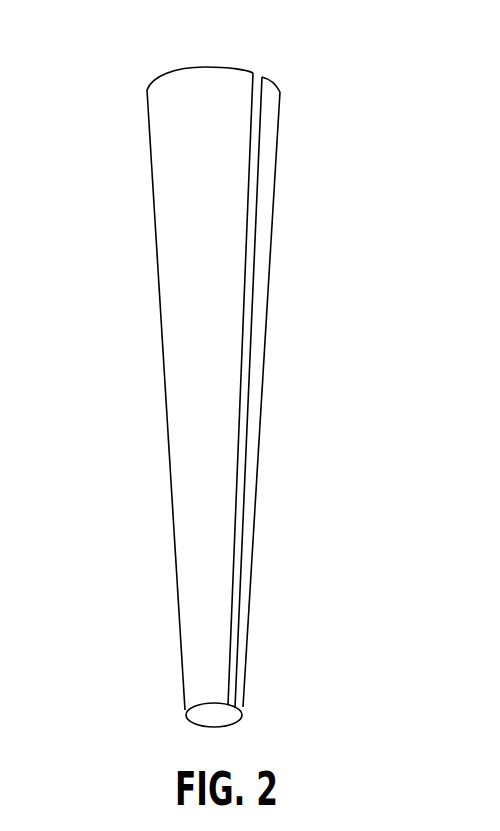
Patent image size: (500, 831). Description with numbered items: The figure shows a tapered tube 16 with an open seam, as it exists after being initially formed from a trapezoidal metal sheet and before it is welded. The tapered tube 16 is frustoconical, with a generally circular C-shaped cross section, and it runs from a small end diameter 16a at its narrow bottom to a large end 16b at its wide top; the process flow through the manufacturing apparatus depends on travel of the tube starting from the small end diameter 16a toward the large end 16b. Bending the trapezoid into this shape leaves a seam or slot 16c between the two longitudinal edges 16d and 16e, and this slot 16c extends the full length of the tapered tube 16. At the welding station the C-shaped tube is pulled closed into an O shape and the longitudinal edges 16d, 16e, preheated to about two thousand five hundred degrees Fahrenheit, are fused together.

The tapered tube 16 is at (196, 378).
The small end diameter 16a is at (193, 705).
The large end 16b is at (178, 70).
The seam or slot 16c is at (245, 335).
The longitudinal edge 16d is at (245, 262).
The longitudinal edge 16e is at (255, 249).